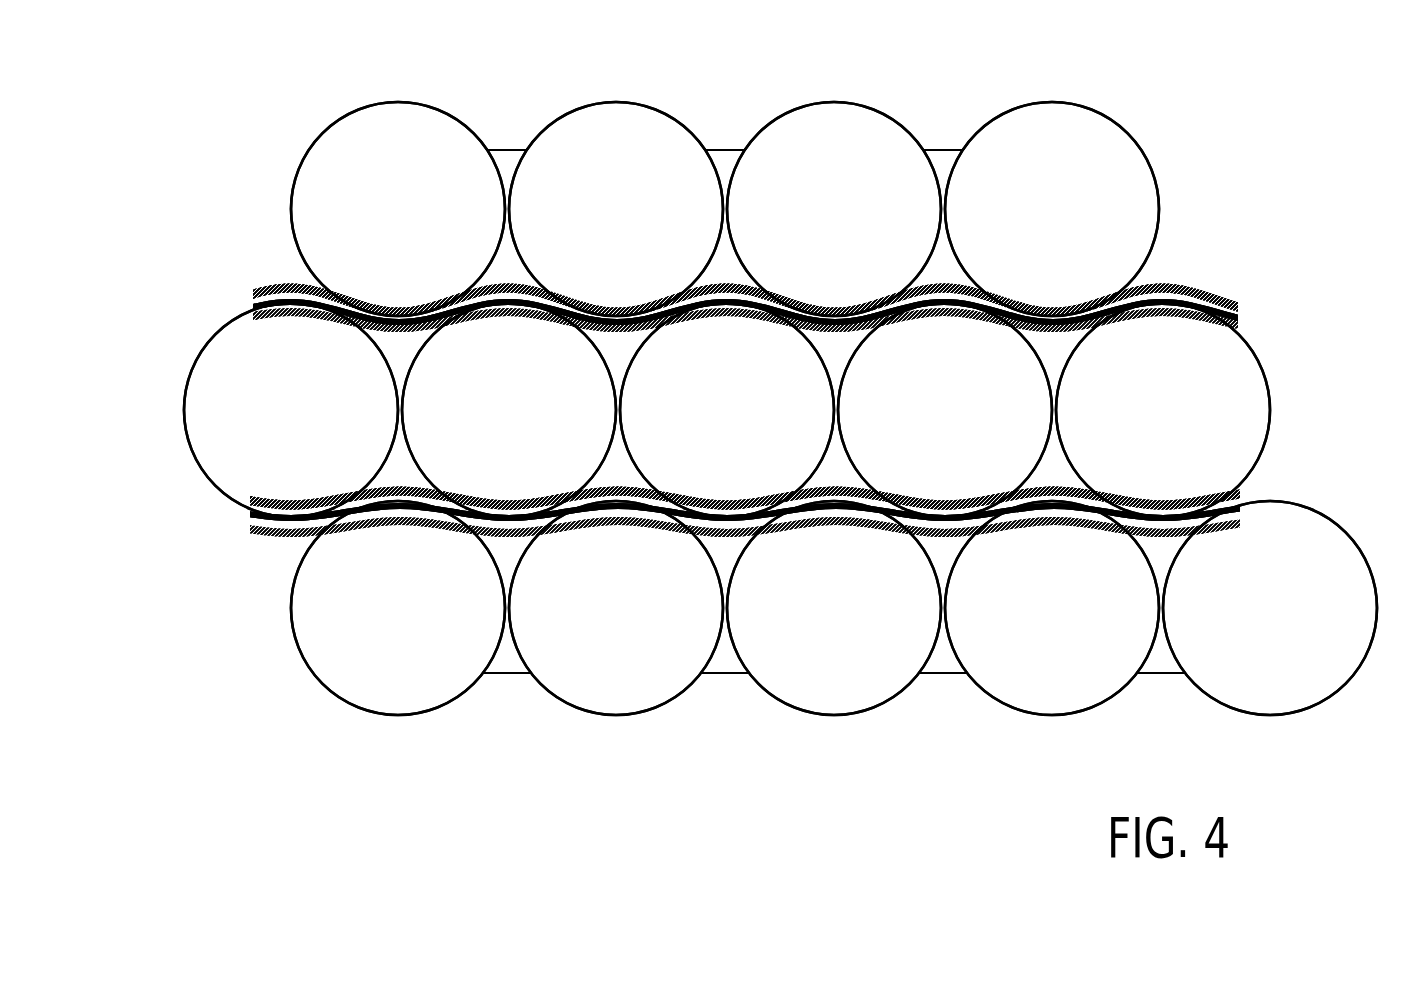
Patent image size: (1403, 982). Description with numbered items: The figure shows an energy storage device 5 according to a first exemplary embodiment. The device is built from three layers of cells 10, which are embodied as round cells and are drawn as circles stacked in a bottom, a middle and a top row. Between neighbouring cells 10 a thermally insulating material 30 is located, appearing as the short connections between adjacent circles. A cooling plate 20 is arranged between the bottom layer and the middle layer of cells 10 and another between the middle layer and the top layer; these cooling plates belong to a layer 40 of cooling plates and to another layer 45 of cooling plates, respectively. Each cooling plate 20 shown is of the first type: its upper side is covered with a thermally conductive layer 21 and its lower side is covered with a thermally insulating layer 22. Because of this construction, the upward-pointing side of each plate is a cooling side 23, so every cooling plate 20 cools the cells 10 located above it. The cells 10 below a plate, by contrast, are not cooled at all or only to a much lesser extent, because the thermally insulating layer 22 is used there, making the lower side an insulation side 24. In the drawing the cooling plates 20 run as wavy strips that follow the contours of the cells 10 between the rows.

The energy storage device 5 is at (236, 720).
The cell 10 is at (398, 112).
The cooling plate 20 is at (255, 298).
The thermally conductive layer 21 is at (272, 289).
The thermally insulating layer 22 is at (265, 311).
The cooling side 23 is at (297, 294).
The insulation side 24 is at (307, 306).
The thermally insulating material 30 is at (510, 676).
The layer of cooling plates 40 is at (1300, 490).
The layer of cooling plates 45 is at (1300, 313).